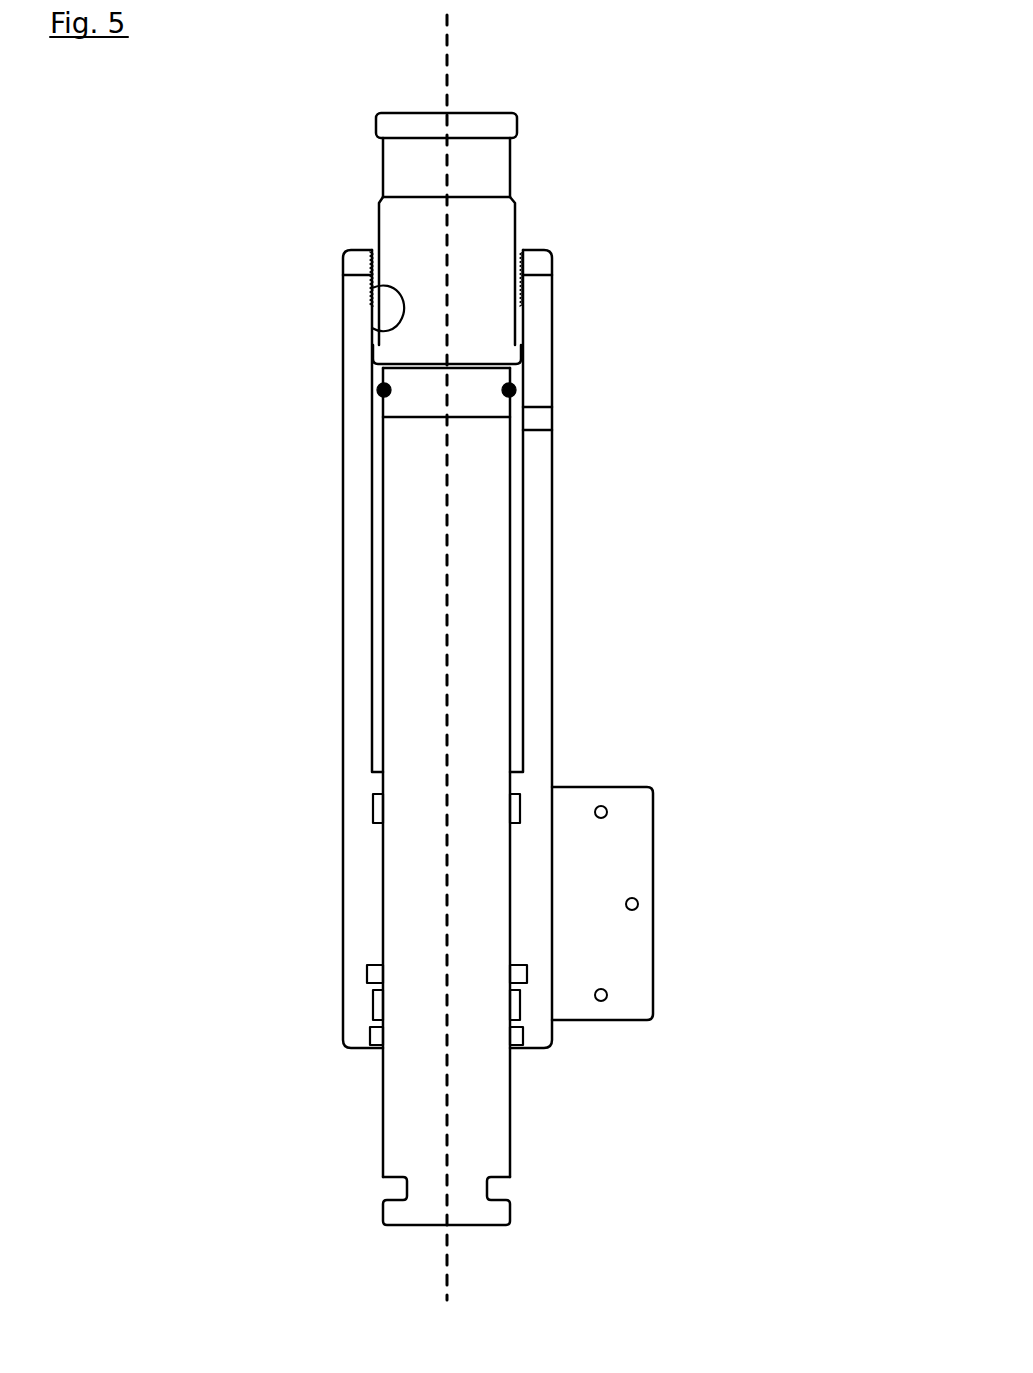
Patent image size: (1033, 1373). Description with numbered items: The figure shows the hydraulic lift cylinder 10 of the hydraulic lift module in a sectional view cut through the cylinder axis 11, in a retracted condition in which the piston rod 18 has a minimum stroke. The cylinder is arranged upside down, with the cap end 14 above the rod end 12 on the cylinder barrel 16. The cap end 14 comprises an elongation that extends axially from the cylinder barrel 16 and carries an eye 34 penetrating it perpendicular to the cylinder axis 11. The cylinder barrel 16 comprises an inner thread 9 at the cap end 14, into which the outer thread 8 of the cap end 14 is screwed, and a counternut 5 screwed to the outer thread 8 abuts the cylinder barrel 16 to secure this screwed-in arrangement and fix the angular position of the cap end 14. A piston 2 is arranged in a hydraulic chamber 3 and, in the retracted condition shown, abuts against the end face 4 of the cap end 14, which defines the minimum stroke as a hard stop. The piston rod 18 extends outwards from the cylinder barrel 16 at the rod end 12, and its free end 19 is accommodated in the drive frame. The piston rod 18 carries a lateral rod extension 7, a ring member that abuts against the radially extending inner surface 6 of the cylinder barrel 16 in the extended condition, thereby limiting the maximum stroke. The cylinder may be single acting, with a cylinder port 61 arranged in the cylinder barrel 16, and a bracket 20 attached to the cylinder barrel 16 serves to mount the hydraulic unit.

The piston 2 is at (400, 412).
The hydraulic chamber 3 is at (377, 560).
The end face 4 is at (410, 361).
The counternut 5 is at (542, 262).
The inner surface 6 is at (378, 772).
The lateral rod extension 7 is at (384, 390).
The outer thread 8 is at (372, 262).
The inner thread 9 is at (377, 327).
The hydraulic lift cylinder 10 is at (640, 135).
The cylinder axis 11 is at (445, 185).
The rod end 12 is at (275, 1004).
The cap end 14 is at (600, 330).
The cylinder barrel 16 is at (537, 618).
The piston rod 18 is at (412, 622).
The free end 19 is at (330, 1189).
The bracket 20 is at (620, 852).
The eye 34 is at (487, 165).
The cylinder port 61 is at (545, 423).